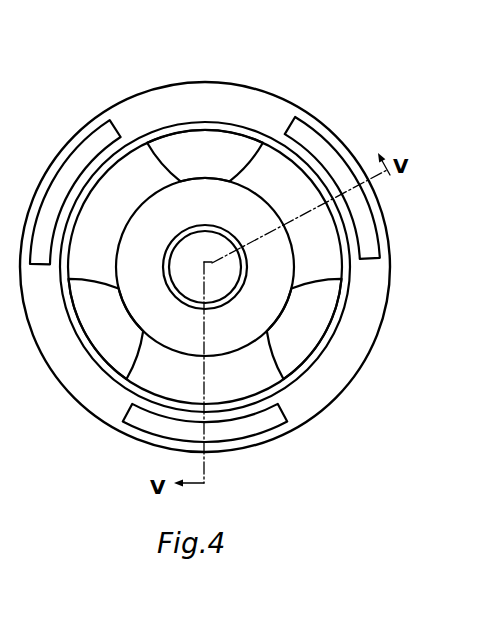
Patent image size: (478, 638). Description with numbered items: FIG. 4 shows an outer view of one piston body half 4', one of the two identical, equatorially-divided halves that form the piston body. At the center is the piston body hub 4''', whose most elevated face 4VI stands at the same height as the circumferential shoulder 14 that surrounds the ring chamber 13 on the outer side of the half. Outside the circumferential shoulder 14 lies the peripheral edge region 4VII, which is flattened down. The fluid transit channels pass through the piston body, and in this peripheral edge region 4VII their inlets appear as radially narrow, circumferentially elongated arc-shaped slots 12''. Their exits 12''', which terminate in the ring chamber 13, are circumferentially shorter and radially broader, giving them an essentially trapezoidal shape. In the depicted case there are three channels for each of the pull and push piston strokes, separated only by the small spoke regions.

The piston body half 4' is at (205, 248).
The circumferential shoulder 14 is at (213, 125).
The ring chamber 13 is at (132, 176).
The arc-shaped slot 12'' is at (350, 188).
The channel exit 12''' is at (348, 329).
The piston body hub 4''' is at (249, 297).
The most elevated face of the piston body hub 4VI is at (262, 295).
The peripheral edge region 4VII is at (307, 395).